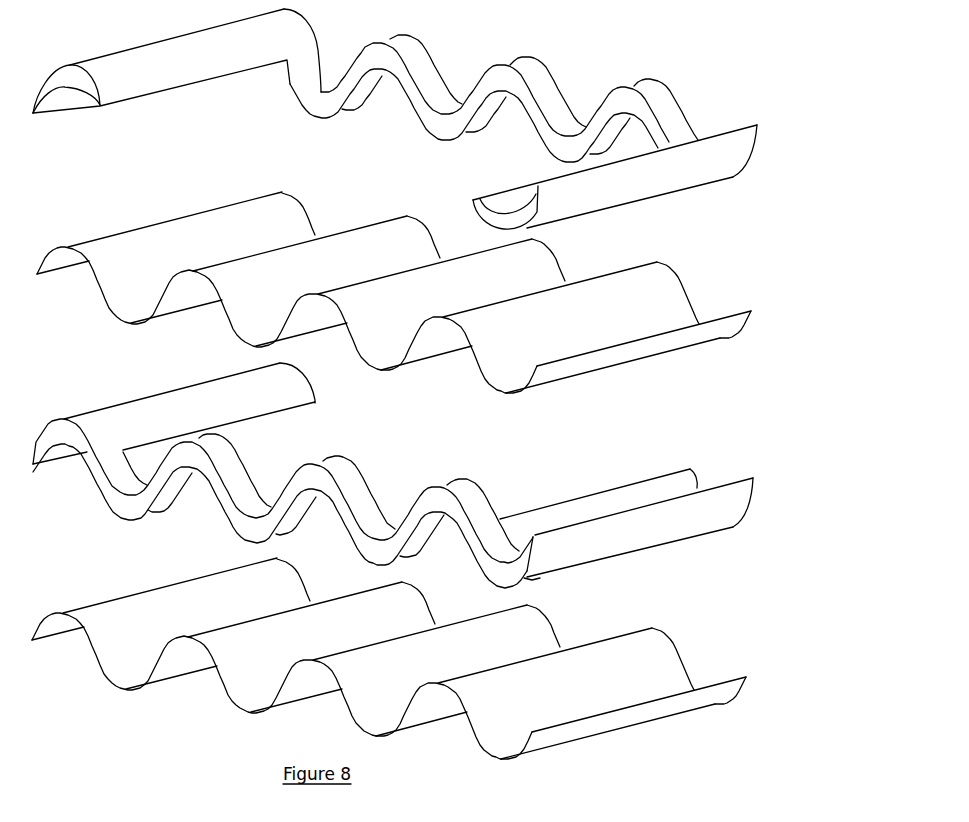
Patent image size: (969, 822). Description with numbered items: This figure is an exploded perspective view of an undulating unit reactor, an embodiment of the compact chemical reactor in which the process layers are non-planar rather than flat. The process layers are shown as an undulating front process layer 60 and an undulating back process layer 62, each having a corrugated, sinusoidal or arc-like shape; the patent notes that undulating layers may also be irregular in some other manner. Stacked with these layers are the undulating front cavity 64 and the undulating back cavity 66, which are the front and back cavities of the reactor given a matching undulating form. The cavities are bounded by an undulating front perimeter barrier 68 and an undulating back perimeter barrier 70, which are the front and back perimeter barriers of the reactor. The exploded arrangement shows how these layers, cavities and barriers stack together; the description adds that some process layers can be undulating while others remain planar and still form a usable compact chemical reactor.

The undulating front process layer 60 is at (678, 342).
The undulating back process layer 62 is at (690, 705).
The undulating front cavity 64 is at (545, 115).
The undulating back cavity 66 is at (637, 475).
The undulating front perimeter barrier 68 is at (690, 507).
The undulating back perimeter barrier 70 is at (677, 170).